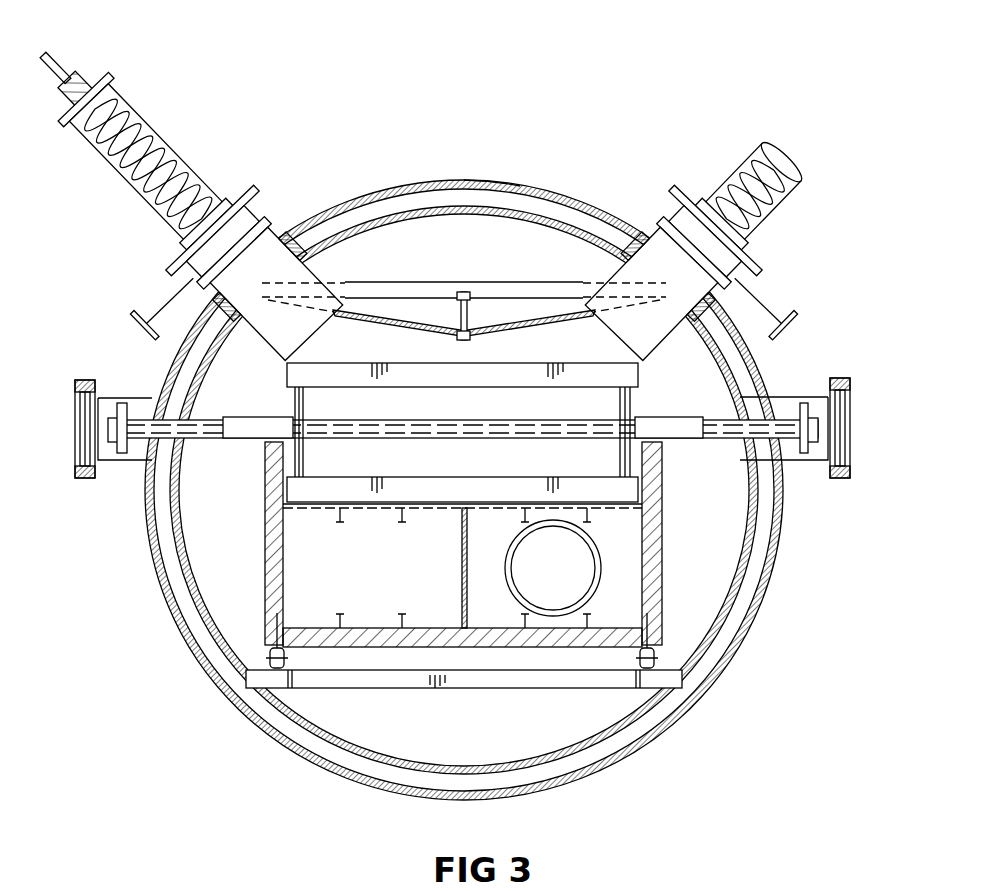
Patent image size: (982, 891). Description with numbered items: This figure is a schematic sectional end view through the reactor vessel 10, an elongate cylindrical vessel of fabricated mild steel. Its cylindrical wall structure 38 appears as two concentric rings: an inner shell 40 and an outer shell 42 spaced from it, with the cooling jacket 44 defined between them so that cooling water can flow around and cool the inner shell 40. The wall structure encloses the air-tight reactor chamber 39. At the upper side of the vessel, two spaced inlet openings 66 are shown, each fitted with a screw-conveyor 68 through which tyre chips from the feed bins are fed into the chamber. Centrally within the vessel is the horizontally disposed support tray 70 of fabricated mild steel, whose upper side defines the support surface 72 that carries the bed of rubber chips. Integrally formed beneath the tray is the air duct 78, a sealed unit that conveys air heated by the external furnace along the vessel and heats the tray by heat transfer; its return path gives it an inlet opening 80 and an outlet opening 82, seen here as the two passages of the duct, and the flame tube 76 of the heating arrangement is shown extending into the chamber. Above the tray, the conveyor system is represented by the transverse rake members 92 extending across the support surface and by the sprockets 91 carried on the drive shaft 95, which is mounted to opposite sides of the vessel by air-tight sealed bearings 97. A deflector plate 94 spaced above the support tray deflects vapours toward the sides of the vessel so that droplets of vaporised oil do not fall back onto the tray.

The reactor vessel 10 is at (373, 154).
The cylindrical wall structure 38 is at (445, 172).
The reactor chamber 39 is at (376, 254).
The inner shell 40 is at (500, 203).
The outer shell 42 is at (553, 191).
The cooling jacket 44 is at (684, 686).
The inlet opening 66 is at (297, 245).
The screw-conveyor 68 is at (173, 160).
The support tray 70 is at (459, 555).
The support surface 72 is at (588, 490).
The flame tube 76 is at (518, 547).
The air duct 78 is at (278, 547).
The inlet opening 80 is at (486, 587).
The outlet opening 82 is at (318, 587).
The sprockets 91 is at (630, 405).
The rake member 92 is at (633, 373).
The deflector plate 94 is at (513, 325).
The drive shaft 95 is at (248, 427).
The sealed bearings 97 is at (87, 378).